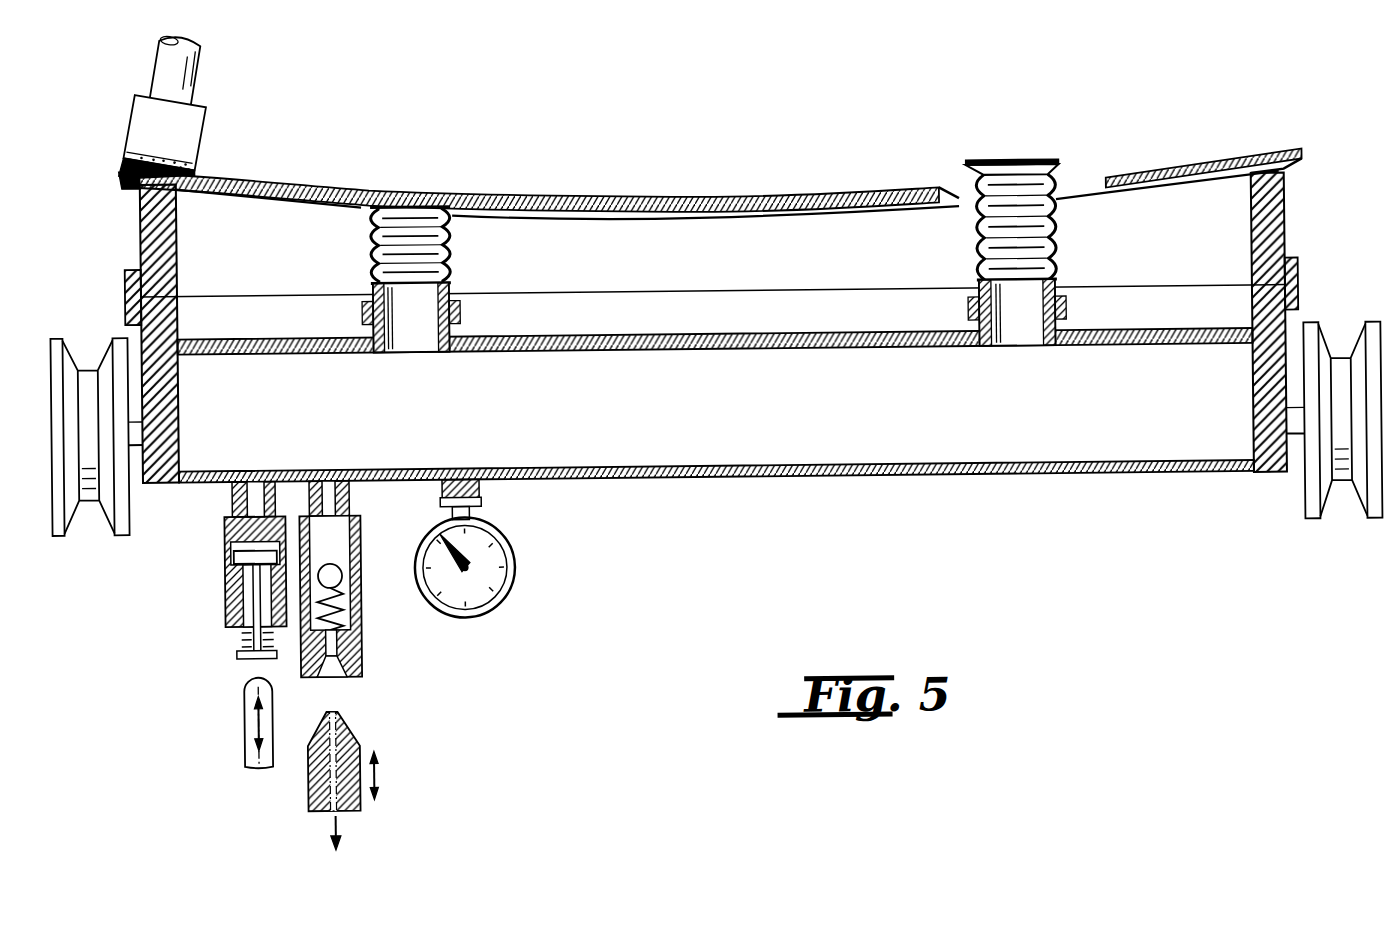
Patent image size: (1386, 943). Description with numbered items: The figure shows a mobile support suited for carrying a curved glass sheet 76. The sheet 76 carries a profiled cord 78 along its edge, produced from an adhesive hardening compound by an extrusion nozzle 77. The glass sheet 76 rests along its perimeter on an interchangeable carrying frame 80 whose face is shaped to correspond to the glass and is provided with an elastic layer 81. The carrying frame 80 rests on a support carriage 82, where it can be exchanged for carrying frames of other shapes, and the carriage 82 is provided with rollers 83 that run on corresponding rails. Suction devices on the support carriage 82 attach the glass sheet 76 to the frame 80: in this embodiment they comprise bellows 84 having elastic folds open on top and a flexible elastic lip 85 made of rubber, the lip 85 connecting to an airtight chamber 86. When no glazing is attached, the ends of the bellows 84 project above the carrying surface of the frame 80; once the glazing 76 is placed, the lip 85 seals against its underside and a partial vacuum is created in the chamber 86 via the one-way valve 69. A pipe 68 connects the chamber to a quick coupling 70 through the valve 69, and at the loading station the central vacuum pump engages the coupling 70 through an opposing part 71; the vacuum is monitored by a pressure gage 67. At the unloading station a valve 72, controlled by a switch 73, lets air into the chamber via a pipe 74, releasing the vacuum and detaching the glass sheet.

The pressure gage 67 is at (467, 591).
The pipe 68 is at (324, 492).
The one-way valve 69 is at (355, 616).
The quick coupling 70 is at (326, 673).
The opposing part 71 is at (295, 792).
The valve 72 is at (214, 588).
The switch 73 is at (230, 744).
The pipe 74 is at (252, 492).
The curved glass sheet 76 is at (667, 203).
The extrusion nozzle 77 is at (192, 123).
The profiled cord 78 is at (150, 152).
The carrying frame 80 is at (797, 237).
The elastic layer 81 is at (138, 180).
The support carriage 82 is at (1304, 295).
The rollers 83 is at (72, 490).
The bellows 84 is at (450, 270).
The flexible elastic lip 85 is at (357, 217).
The airtight chamber 86 is at (870, 461).